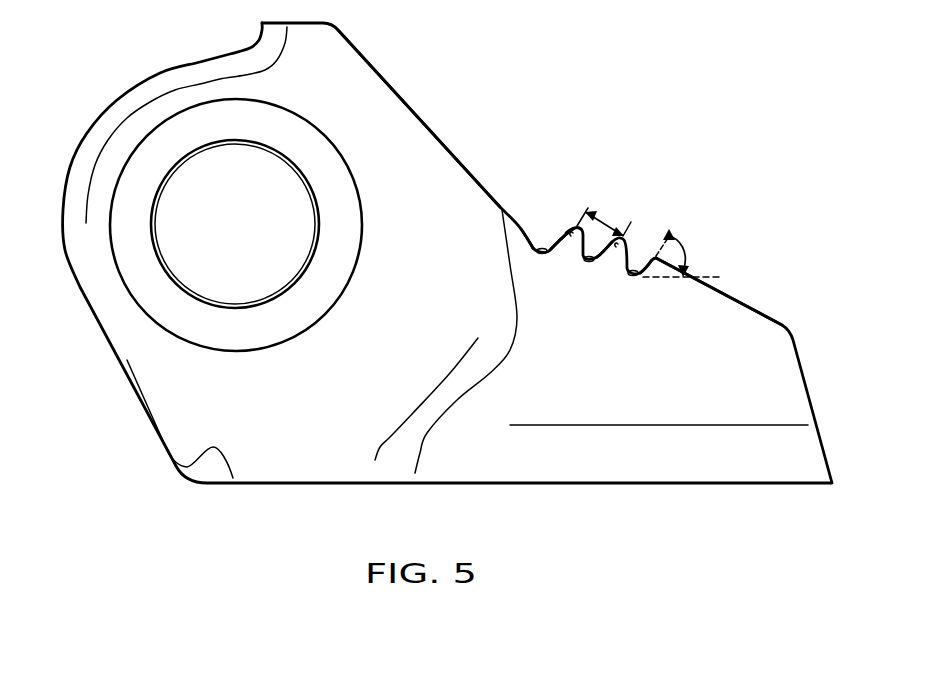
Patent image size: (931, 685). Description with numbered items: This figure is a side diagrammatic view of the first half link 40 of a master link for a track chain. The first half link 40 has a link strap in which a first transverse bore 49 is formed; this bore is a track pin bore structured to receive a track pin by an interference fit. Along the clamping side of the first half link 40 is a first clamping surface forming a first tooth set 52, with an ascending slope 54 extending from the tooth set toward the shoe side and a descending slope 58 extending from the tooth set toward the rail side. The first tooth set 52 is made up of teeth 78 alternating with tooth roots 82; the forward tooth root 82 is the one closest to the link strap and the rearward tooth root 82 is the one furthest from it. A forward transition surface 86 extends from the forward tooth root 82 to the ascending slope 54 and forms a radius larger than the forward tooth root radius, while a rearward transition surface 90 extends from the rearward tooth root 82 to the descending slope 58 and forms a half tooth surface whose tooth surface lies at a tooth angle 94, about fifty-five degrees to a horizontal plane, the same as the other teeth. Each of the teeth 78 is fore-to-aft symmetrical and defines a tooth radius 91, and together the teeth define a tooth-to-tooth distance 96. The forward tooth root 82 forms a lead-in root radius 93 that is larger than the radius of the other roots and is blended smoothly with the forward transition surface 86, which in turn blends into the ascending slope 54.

The first half link 40 is at (84, 271).
The first transverse bore 49 is at (178, 165).
The first tooth set 52 is at (624, 218).
The ascending slope 54 is at (417, 109).
The descending slope 58 is at (756, 308).
The teeth 78 is at (573, 229).
The tooth roots 82 is at (541, 255).
The forward transition surface 86 is at (530, 240).
The rearward transition surface 90 is at (645, 266).
The tooth radius 91 is at (617, 244).
The lead-in root radius 93 is at (533, 251).
The tooth angle 94 is at (683, 253).
The tooth-to-tooth distance 96 is at (615, 226).